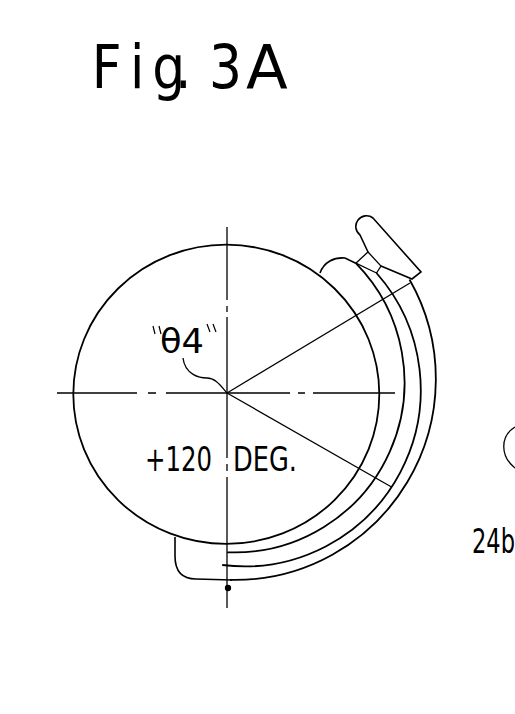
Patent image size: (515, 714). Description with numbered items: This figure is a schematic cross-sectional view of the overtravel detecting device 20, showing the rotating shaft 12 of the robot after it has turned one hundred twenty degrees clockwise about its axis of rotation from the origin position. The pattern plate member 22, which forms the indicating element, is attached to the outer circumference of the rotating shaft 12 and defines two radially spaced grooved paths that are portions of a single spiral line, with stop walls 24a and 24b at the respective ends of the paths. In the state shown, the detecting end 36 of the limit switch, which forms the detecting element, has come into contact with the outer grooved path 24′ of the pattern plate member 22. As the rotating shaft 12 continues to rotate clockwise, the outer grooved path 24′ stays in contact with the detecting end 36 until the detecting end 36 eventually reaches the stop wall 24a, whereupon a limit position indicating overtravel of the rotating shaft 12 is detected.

The rotating shaft 12 is at (185, 257).
The overtravel detecting device 20 is at (317, 430).
The pattern plate member 22 is at (389, 251).
The stop wall 24a is at (416, 288).
The outer grooved path 24′ is at (434, 375).
The stop wall 24b is at (225, 563).
The detecting end 36 is at (229, 587).